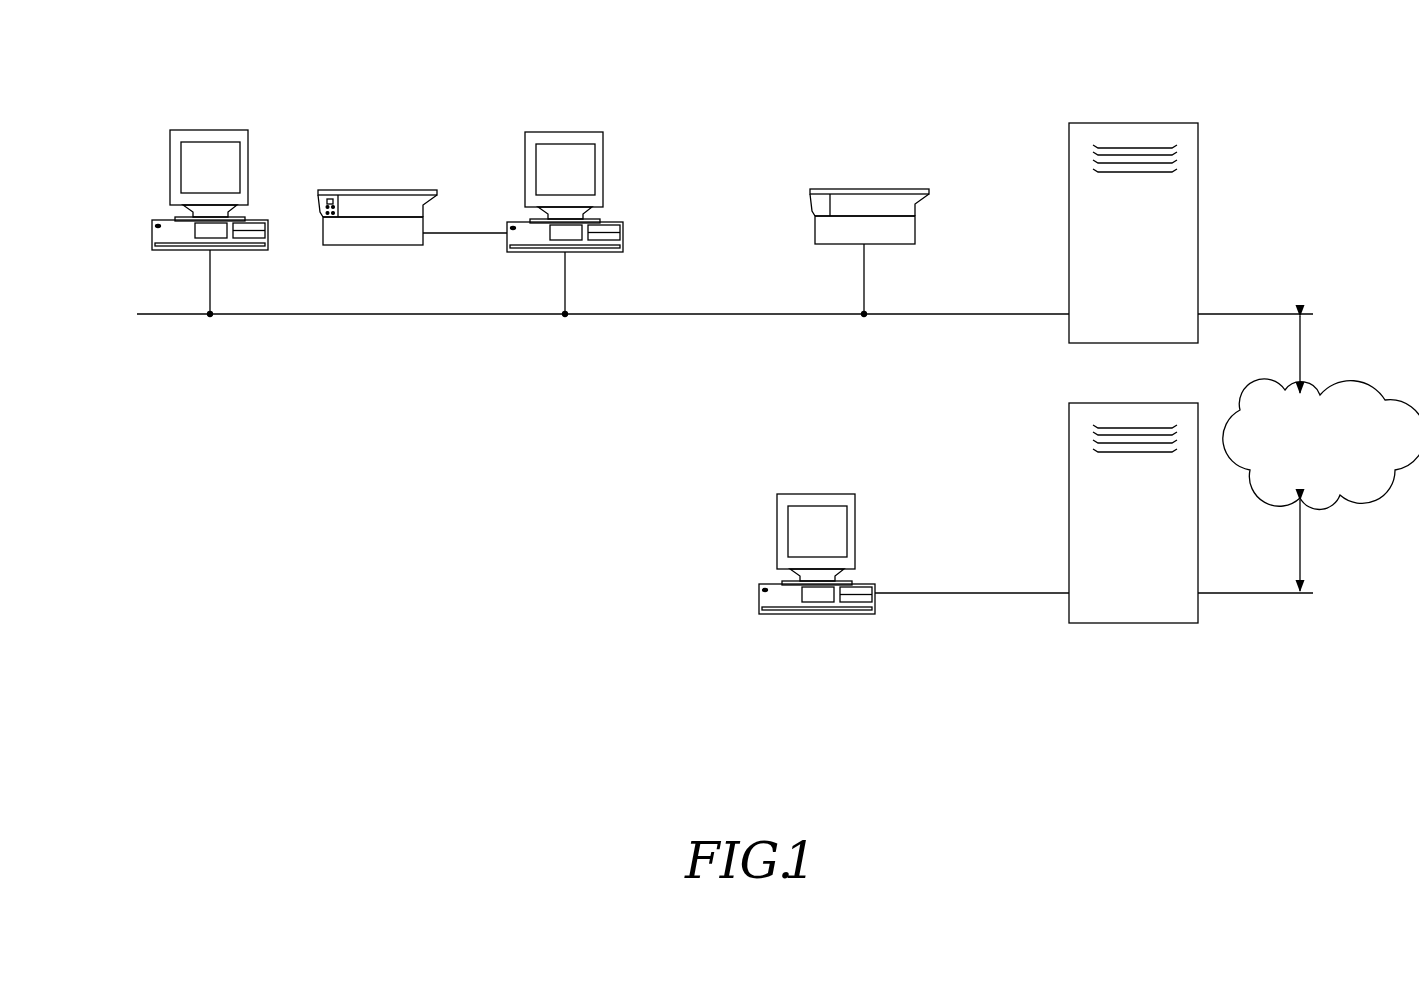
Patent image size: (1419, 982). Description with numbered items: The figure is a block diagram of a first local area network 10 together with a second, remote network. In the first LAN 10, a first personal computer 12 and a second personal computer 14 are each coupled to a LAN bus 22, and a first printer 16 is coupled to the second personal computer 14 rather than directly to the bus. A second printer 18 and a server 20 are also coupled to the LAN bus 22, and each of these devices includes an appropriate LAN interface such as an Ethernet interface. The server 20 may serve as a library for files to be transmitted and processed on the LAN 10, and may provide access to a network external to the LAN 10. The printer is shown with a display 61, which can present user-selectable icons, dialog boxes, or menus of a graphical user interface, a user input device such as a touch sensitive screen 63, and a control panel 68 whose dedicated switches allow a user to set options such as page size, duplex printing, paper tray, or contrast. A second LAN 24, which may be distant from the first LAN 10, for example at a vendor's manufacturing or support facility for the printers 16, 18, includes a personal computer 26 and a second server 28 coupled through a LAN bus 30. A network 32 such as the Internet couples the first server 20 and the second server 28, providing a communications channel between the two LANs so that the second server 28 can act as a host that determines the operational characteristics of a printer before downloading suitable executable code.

The first local area network 10 is at (176, 76).
The first personal computer 12 is at (152, 232).
The second personal computer 14 is at (623, 233).
The first printer 16 is at (397, 190).
The second printer 18 is at (848, 189).
The server 20 is at (1069, 165).
The LAN bus 22 is at (653, 314).
The second local area network 24 is at (686, 525).
The personal computer 26 is at (760, 598).
The second server 28 is at (1069, 513).
The LAN bus 30 is at (935, 593).
The network 32 is at (1368, 488).
The display 61 is at (333, 194).
The touch sensitive screen 63 is at (330, 216).
The control panel 68 is at (345, 202).